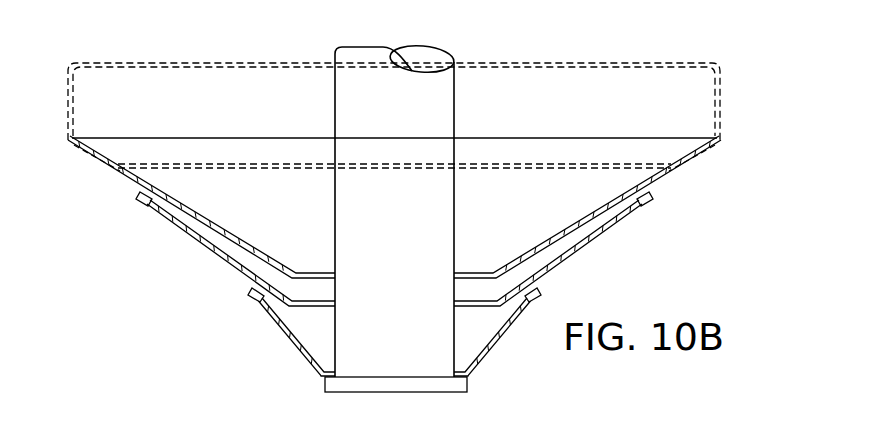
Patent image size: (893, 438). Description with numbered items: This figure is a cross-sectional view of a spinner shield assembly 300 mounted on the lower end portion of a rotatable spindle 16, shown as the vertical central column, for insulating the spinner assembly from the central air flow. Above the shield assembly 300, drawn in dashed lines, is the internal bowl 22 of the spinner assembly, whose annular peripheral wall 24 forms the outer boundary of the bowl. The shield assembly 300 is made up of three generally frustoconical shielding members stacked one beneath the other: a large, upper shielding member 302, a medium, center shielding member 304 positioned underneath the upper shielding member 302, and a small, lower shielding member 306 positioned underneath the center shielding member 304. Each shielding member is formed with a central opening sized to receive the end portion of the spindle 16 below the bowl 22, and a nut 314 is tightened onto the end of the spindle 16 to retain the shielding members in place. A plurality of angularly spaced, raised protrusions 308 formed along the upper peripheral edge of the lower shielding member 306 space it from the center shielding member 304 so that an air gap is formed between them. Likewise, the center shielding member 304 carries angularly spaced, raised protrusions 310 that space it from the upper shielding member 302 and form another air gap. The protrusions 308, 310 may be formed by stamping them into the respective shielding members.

The spindle 16 is at (454, 117).
The bowl 22 is at (566, 163).
The peripheral wall 24 is at (721, 105).
The spinner shield assembly 300 is at (714, 176).
The upper shielding member 302 is at (670, 175).
The center shielding member 304 is at (580, 243).
The lower shielding member 306 is at (507, 343).
The protrusions 308 is at (257, 297).
The protrusions 310 is at (147, 200).
The nut 314 is at (353, 383).